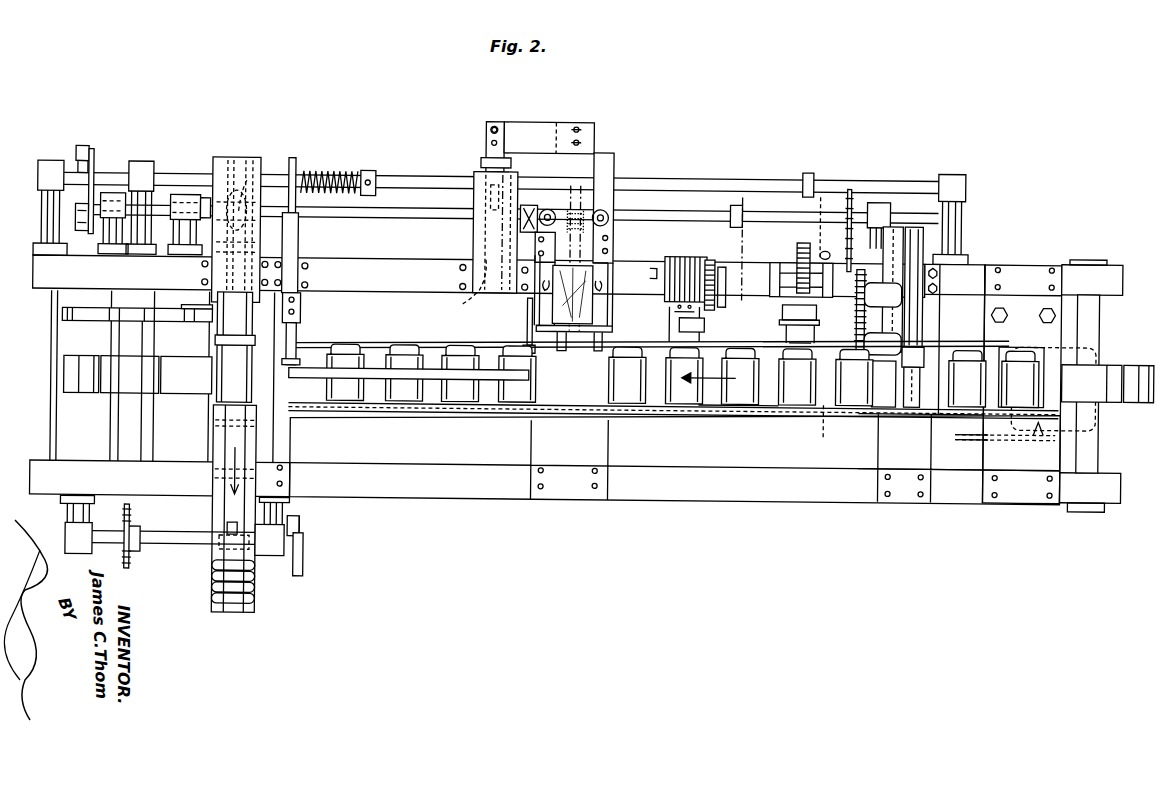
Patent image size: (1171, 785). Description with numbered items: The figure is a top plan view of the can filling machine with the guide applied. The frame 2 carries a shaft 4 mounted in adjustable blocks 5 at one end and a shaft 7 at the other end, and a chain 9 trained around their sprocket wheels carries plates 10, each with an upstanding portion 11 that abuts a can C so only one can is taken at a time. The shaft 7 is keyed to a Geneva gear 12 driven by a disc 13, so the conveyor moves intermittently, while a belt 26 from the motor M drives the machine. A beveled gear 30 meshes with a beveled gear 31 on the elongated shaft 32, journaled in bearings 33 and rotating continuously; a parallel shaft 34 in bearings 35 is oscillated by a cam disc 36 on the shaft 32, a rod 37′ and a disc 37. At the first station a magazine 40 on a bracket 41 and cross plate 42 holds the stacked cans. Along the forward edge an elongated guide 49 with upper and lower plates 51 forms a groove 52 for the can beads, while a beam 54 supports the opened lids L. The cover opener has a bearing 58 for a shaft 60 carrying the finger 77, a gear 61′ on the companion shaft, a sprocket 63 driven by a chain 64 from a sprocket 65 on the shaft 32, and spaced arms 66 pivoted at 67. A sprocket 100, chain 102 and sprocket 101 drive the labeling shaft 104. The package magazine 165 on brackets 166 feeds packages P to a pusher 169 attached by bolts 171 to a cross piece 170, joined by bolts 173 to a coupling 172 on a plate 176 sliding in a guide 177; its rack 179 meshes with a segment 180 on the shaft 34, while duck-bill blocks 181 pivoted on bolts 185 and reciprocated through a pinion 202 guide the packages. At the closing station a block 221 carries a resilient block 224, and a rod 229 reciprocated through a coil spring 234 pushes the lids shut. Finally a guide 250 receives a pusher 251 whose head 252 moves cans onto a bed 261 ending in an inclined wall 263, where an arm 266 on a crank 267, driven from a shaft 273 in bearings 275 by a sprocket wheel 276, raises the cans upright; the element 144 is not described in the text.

The frame 2 is at (970, 256).
The shaft 4 is at (1095, 438).
The blocks 5 is at (1087, 252).
The shaft 7 is at (140, 426).
The chain 9 is at (88, 385).
The plates 10 is at (170, 392).
The upstanding portion 11 is at (1135, 356).
The Geneva gear 12 is at (95, 320).
The disc 13 is at (200, 307).
The belt 26 is at (965, 431).
The beveled gear 30 is at (290, 238).
The beveled gear 31 is at (246, 178).
The elongated shaft 32 is at (325, 215).
The bearings 33 is at (112, 192).
The shaft 34 is at (165, 158).
The bearings 35 is at (50, 160).
The cam disc 36 is at (98, 255).
The disc 37 is at (90, 148).
The rod 37′ is at (78, 212).
The magazine 40 is at (1040, 412).
The bracket 41 is at (1023, 320).
The cross plate 42 is at (1020, 502).
The elongated guide 49 is at (795, 412).
The upper and lower plates 51 is at (725, 410).
The groove 52 is at (834, 430).
The beam 54 is at (468, 342).
The bearing 58 is at (882, 344).
The shaft 60 is at (866, 365).
The gear 61′ is at (883, 295).
The sprocket 63 is at (828, 313).
The chain 64 is at (820, 212).
The sprocket 65 is at (849, 181).
The spaced arms 66 is at (905, 311).
The pivot 67 is at (922, 224).
The finger 77 is at (913, 382).
The sprocket 100 is at (740, 198).
The sprocket 101 is at (730, 285).
The chain 102 is at (743, 232).
The shaft 104 is at (657, 270).
The block 144 is at (708, 327).
The magazine 165 is at (540, 298).
The brackets 166 is at (524, 342).
The pusher 169 is at (605, 157).
The cross piece 170 is at (535, 122).
The bolts 171 is at (577, 120).
The coupling 172 is at (488, 124).
The bolts 173 is at (496, 122).
The plate 176 is at (462, 300).
The guide 177 is at (475, 236).
The toothed rack 179 is at (490, 190).
The toothed segment 180 is at (482, 153).
The blocks 181 is at (608, 220).
The bolts 185 is at (547, 204).
The pinion 202 is at (573, 200).
The block 221 is at (300, 297).
The resilient block 224 is at (297, 356).
The rod 229 is at (292, 155).
The coil spring 234 is at (340, 168).
The guide 250 is at (218, 157).
The pusher 251 is at (237, 316).
The depending head 252 is at (222, 338).
The bed 261 is at (214, 442).
The inclined wall 263 is at (222, 545).
The arm 266 is at (230, 524).
The crank 267 is at (304, 532).
The shaft 273 is at (170, 545).
The bearings 275 is at (68, 523).
The sprocket wheel 276 is at (130, 567).
The cans C is at (275, 581).
The packages P is at (575, 282).
The lids L is at (392, 342).
The motor M is at (1070, 340).